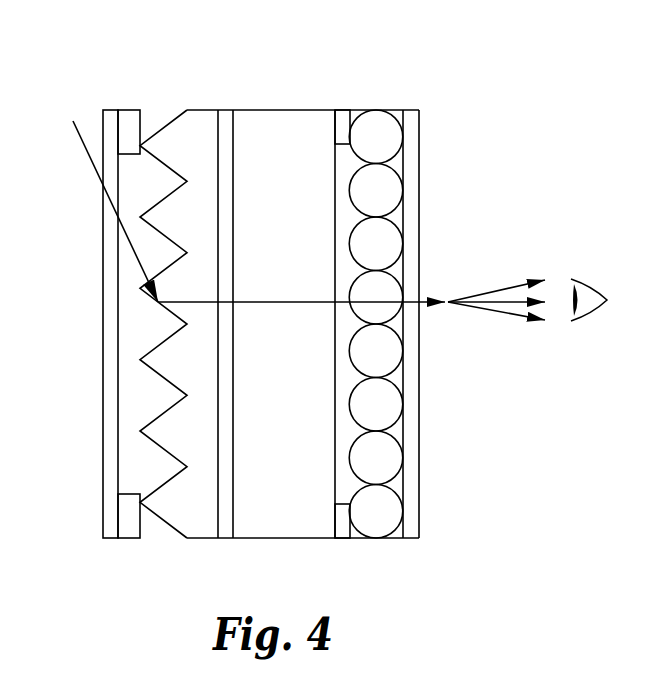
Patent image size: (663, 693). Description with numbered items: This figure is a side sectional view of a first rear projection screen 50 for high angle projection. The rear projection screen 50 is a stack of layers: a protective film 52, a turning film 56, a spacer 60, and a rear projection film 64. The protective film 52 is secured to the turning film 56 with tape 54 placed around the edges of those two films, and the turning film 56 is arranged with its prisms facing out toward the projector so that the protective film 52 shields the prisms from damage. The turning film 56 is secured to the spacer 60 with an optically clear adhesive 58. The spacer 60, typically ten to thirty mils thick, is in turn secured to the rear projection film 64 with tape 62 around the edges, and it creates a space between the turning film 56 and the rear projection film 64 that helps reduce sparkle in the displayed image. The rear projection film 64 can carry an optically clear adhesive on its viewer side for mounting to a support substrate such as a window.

The rear projection screen 50 is at (447, 78).
The protective film 52 is at (112, 345).
The tape 54 is at (128, 527).
The turning film 56 is at (207, 530).
The optically clear adhesive 58 is at (225, 530).
The spacer 60 is at (282, 525).
The tape 62 is at (343, 528).
The rear projection film 64 is at (420, 545).